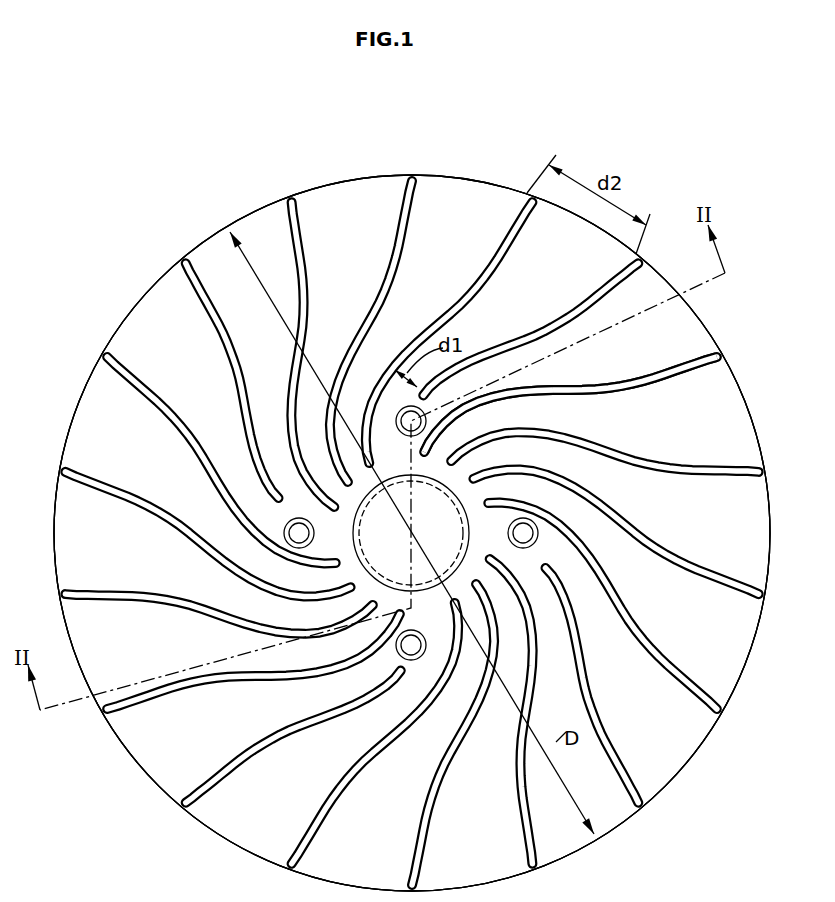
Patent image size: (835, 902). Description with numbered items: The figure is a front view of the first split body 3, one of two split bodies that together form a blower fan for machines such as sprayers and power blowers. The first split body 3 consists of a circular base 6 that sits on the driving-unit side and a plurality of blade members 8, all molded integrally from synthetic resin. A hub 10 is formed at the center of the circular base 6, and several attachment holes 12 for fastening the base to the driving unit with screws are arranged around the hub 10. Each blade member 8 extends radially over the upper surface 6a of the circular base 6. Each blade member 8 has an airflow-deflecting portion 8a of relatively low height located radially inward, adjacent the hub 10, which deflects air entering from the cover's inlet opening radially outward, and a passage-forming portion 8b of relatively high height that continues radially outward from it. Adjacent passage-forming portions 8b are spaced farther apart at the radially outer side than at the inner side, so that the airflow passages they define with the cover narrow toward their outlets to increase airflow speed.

The first split body 3 is at (321, 187).
The circular base 6 is at (450, 225).
The upper surface 6a is at (165, 343).
The blade members 8 is at (697, 468).
The airflow-deflecting portion 8a is at (496, 392).
The passage-forming portion 8b is at (660, 372).
The hub 10 is at (390, 533).
The attachment holes 12 is at (413, 647).